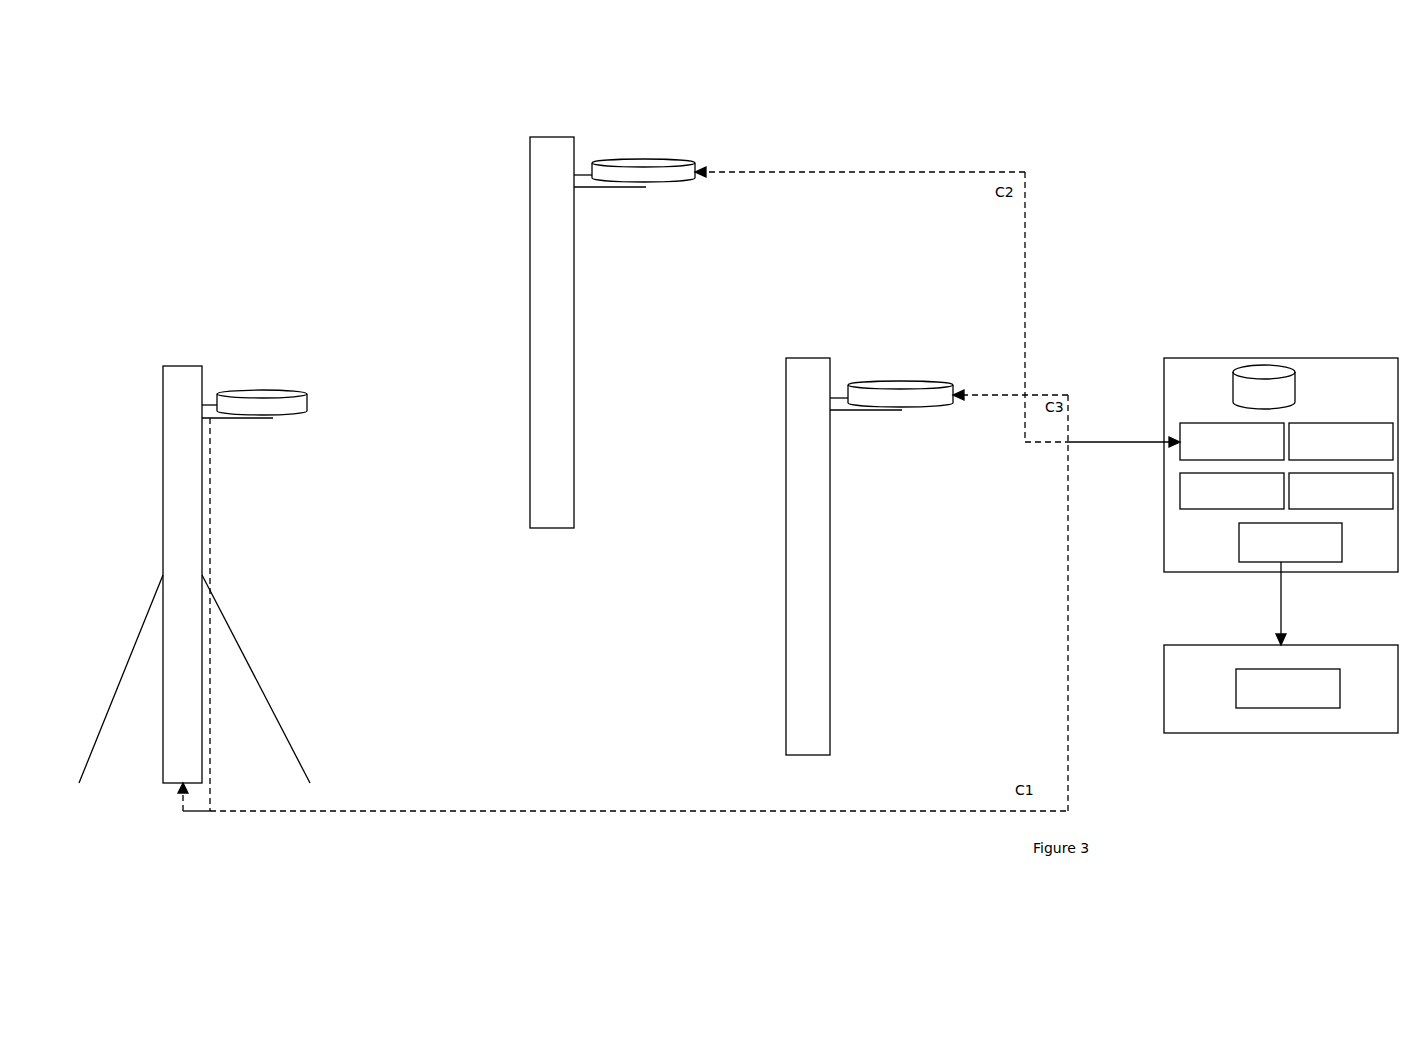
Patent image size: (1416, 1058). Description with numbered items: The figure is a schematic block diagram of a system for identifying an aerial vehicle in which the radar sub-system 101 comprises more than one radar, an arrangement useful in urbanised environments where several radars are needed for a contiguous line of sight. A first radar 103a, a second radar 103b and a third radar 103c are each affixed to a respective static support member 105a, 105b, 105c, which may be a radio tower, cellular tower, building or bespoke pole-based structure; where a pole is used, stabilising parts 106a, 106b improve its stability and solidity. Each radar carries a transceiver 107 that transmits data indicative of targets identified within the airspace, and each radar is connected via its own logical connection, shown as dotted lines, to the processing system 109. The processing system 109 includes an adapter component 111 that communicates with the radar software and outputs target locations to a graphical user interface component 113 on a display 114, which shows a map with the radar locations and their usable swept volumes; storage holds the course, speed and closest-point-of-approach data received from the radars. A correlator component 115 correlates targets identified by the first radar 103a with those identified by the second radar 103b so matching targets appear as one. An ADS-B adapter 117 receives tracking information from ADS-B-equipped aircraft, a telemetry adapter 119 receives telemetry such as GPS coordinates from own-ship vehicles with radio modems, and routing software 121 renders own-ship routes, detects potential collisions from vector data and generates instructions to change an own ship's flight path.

The radar sub-system 101 is at (222, 149).
The first radar 103a is at (257, 391).
The second radar 103b is at (649, 155).
The third radar 103c is at (905, 378).
The support member 105a is at (182, 574).
The support member 105b is at (552, 332).
The support member 105c is at (808, 556).
The stabilising part 106a is at (115, 679).
The stabilising part 106b is at (260, 679).
The transceiver 107 is at (213, 397).
The processing system 109 is at (1282, 357).
The adapter component 111 is at (1232, 441).
The graphical user interface component 113 is at (1288, 688).
The display 114 is at (1164, 690).
The correlator component 115 is at (1341, 441).
The ADS-B adapter 117 is at (1232, 491).
The telemetry adapter 119 is at (1341, 491).
The routing software 121 is at (1290, 542).